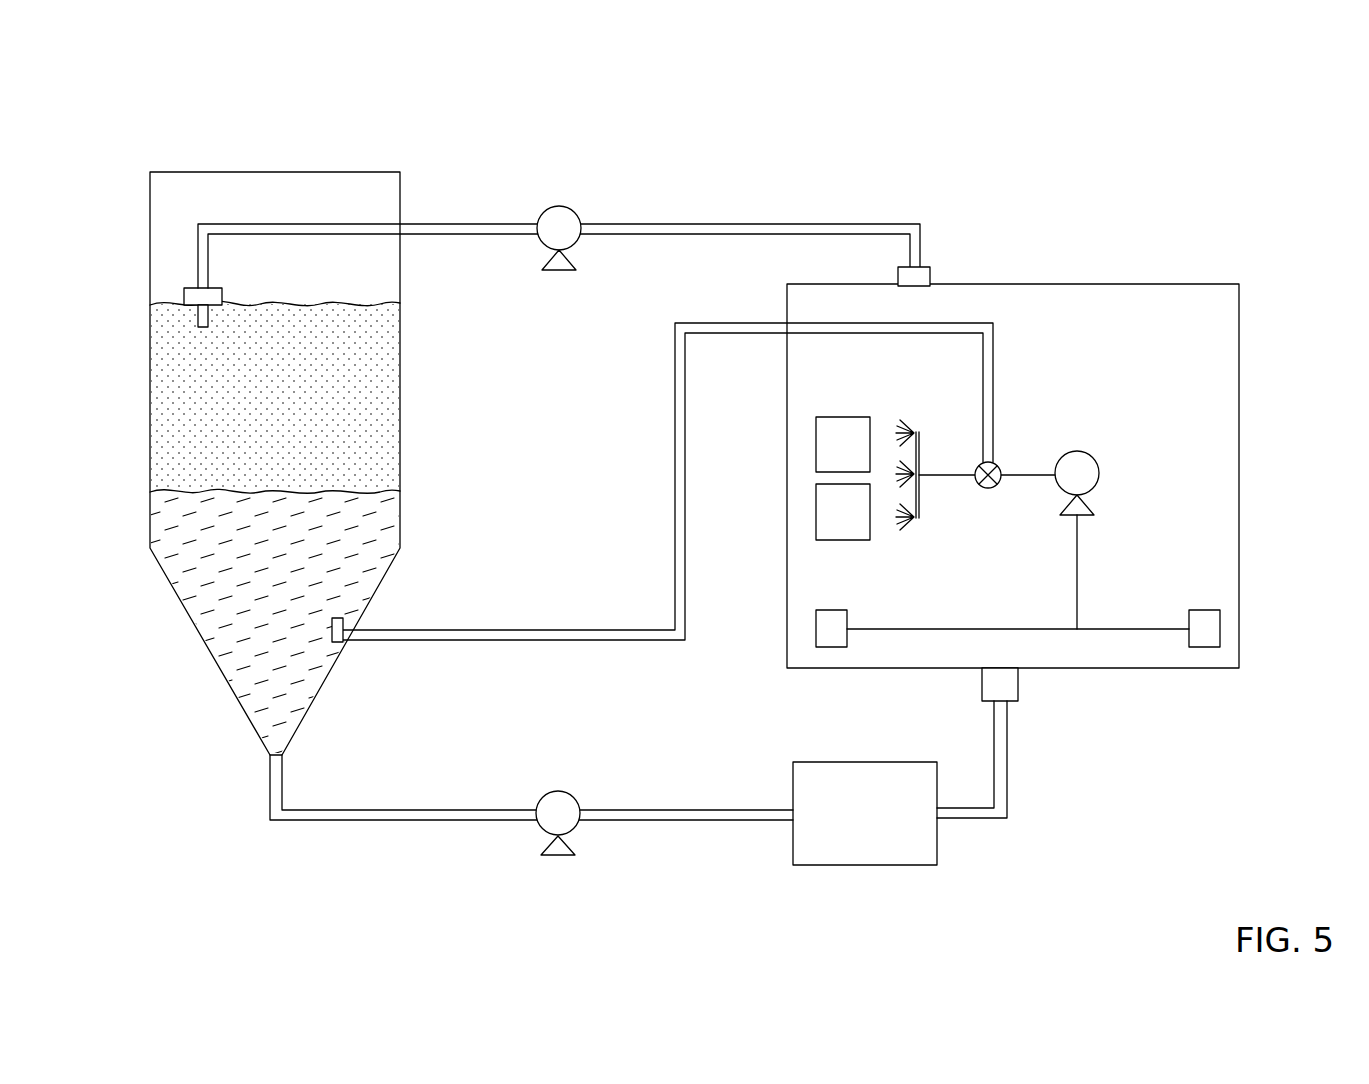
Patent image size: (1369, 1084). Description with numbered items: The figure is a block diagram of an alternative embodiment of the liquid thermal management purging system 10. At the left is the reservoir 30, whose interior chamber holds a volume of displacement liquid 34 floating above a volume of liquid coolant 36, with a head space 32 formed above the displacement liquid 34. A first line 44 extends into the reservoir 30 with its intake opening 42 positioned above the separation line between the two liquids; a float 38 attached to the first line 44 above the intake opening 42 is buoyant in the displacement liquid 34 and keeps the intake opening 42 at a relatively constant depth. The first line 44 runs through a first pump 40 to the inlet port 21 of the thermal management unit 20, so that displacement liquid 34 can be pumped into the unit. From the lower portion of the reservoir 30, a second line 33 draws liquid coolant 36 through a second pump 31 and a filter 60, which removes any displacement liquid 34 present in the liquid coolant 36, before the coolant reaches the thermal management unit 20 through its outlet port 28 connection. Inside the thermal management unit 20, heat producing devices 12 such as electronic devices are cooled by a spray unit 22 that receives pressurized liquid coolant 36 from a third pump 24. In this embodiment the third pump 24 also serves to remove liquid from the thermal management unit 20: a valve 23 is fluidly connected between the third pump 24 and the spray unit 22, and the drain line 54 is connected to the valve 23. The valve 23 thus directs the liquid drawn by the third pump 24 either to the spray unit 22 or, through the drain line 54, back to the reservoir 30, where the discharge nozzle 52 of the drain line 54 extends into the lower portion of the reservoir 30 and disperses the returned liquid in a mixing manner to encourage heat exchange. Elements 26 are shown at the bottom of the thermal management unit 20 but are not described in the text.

The liquid thermal management purging system 10 is at (178, 124).
The heat producing devices 12 is at (862, 465).
The thermal management unit 20 is at (1125, 282).
The inlet port 21 is at (930, 270).
The spray unit 22 is at (920, 518).
The valve 23 is at (997, 465).
The third pump 24 is at (1098, 455).
The sensors / supports 26 is at (828, 648).
The outlet port 28 is at (1018, 686).
The reservoir 30 is at (400, 200).
The second pump 31 is at (572, 795).
The head space 32 is at (293, 285).
The second line 33 is at (367, 810).
The displacement liquid 34 is at (293, 416).
The liquid coolant 36 is at (293, 596).
The float 38 is at (185, 293).
The first pump 40 is at (577, 212).
The intake opening 42 is at (197, 326).
The first line 44 is at (428, 236).
The discharge nozzle 52 is at (340, 620).
The drain line 54 is at (505, 630).
The filter 60 is at (884, 858).